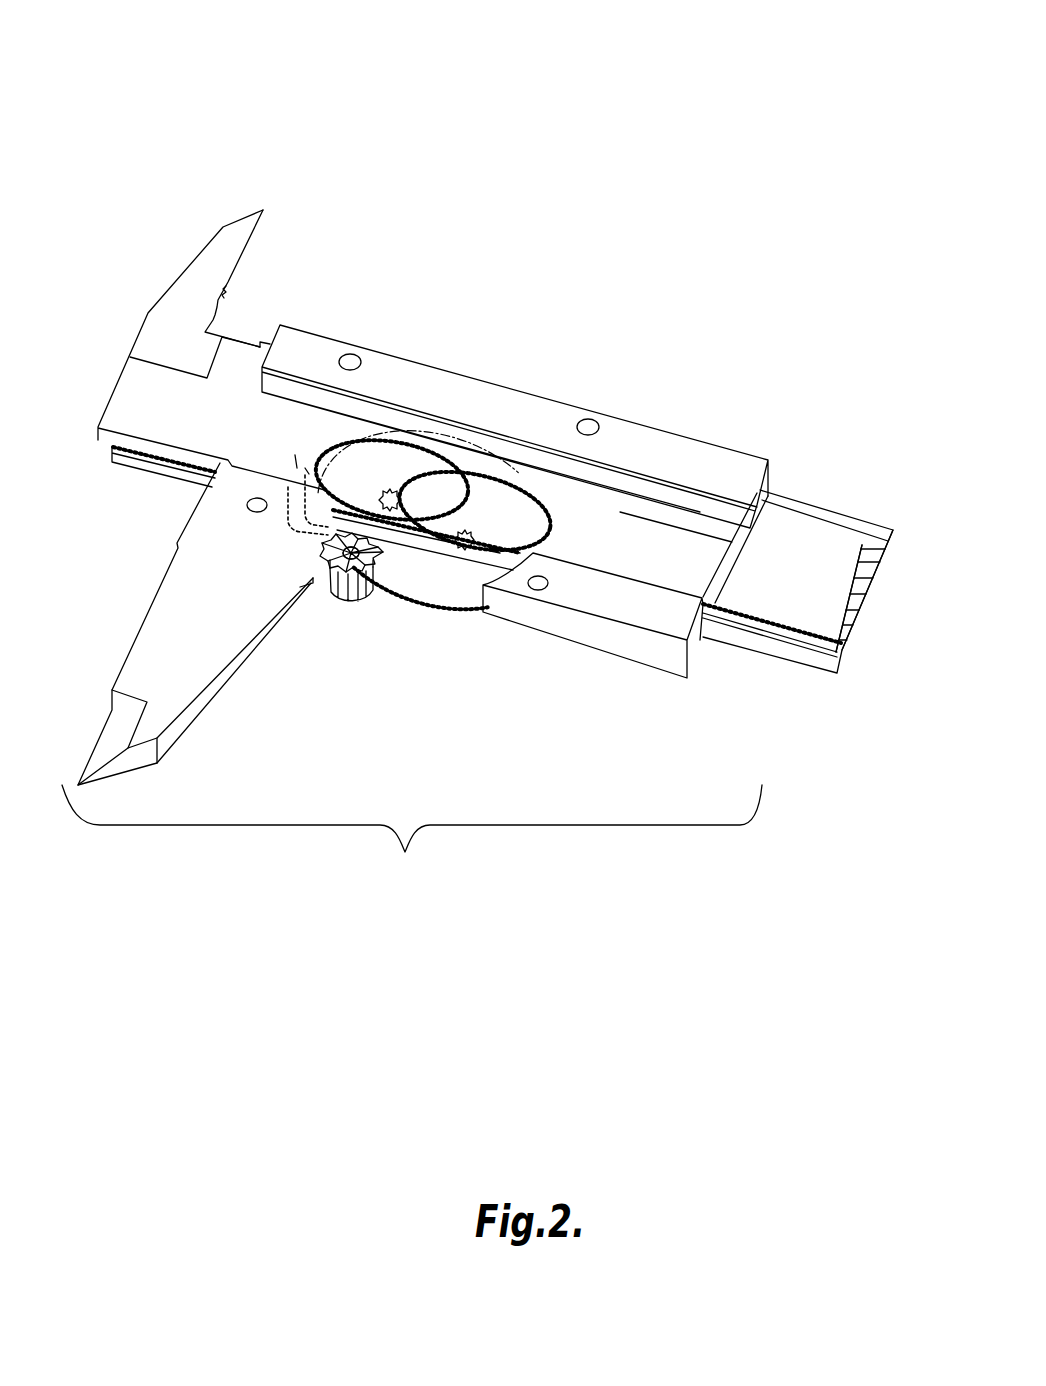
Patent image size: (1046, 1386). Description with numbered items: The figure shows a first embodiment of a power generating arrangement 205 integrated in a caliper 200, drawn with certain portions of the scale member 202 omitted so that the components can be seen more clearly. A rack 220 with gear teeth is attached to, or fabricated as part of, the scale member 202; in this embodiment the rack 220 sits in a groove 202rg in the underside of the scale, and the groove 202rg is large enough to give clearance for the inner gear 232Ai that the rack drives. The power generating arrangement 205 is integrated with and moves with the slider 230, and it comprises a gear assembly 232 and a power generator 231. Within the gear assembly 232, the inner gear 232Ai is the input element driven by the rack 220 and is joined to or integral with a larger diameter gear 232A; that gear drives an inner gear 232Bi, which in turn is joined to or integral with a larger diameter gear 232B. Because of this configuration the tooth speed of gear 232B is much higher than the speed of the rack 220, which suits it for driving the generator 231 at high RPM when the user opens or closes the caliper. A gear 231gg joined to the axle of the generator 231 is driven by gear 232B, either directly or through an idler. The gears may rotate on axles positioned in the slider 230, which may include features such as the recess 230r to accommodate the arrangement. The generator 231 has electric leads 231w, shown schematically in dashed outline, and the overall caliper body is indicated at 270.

The caliper 200 is at (797, 43).
The scale member 202 is at (873, 574).
The groove 202rg is at (845, 642).
The power generating arrangement 205 is at (647, 300).
The rack 220 is at (517, 553).
The slider 230 is at (730, 467).
The recess 230r is at (350, 520).
The power generator 231 is at (367, 520).
The gear 231gg is at (383, 540).
The electric leads 231w is at (293, 482).
The gear assembly 232 is at (656, 372).
The larger diameter gear 232A is at (490, 500).
The inner gear 232Ai is at (480, 540).
The larger diameter gear 232B is at (397, 463).
The inner gear 232Bi is at (393, 497).
The caliper body 270 is at (412, 558).